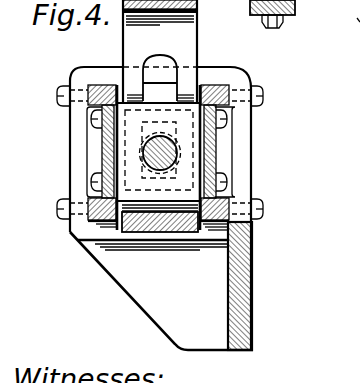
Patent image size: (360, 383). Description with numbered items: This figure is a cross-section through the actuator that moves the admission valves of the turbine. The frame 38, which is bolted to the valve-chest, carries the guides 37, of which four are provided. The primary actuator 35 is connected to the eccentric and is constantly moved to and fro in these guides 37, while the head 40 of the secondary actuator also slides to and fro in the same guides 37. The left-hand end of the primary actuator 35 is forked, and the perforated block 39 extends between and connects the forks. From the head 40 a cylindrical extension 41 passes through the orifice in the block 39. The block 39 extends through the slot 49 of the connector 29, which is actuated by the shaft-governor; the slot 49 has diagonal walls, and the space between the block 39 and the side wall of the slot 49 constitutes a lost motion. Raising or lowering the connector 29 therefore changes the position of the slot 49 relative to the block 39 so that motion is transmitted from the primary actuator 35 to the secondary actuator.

The connector 29 is at (201, 0).
The head 40 is at (330, 0).
The slot 49 is at (137, 53).
The frame 38 is at (224, 73).
The guides 37 is at (230, 104).
The primary actuator 35 is at (212, 147).
The perforated block 39 is at (190, 163).
The cylindrical extension 41 is at (143, 152).